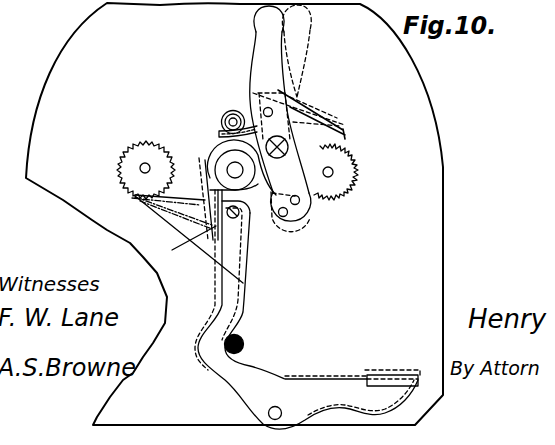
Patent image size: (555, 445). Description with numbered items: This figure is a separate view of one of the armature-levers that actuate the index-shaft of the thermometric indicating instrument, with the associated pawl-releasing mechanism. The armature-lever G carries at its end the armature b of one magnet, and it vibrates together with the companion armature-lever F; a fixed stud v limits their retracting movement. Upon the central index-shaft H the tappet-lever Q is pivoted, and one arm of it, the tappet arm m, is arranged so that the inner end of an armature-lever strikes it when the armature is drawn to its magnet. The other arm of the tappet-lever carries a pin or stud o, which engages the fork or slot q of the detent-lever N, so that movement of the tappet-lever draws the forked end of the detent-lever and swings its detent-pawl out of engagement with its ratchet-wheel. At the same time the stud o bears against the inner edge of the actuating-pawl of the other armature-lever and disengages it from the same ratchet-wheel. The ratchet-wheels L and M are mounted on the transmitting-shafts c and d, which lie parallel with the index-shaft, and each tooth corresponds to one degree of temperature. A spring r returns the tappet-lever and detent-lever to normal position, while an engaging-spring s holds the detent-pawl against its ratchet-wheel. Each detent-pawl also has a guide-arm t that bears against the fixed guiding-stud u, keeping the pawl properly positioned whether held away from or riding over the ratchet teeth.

The detent-lever N is at (280, 113).
The engaging-spring s is at (299, 65).
The arm i' is at (323, 114).
The fixed guiding-stud u is at (233, 114).
The guide-arm t is at (231, 133).
The ratchet-wheel M is at (146, 160).
The transmitting-shaft d is at (151, 168).
The index-shaft H is at (228, 170).
The tappet-lever Q is at (237, 190).
The slot q is at (278, 156).
The ratchet-wheel L is at (336, 172).
The transmitting-shaft c is at (332, 172).
The pin or stud o is at (287, 216).
The armature-lever F is at (172, 212).
The tappet arm m is at (189, 239).
The spring r is at (194, 239).
The armature-lever G is at (306, 309).
The fixed stud v is at (242, 343).
The armature b is at (392, 371).